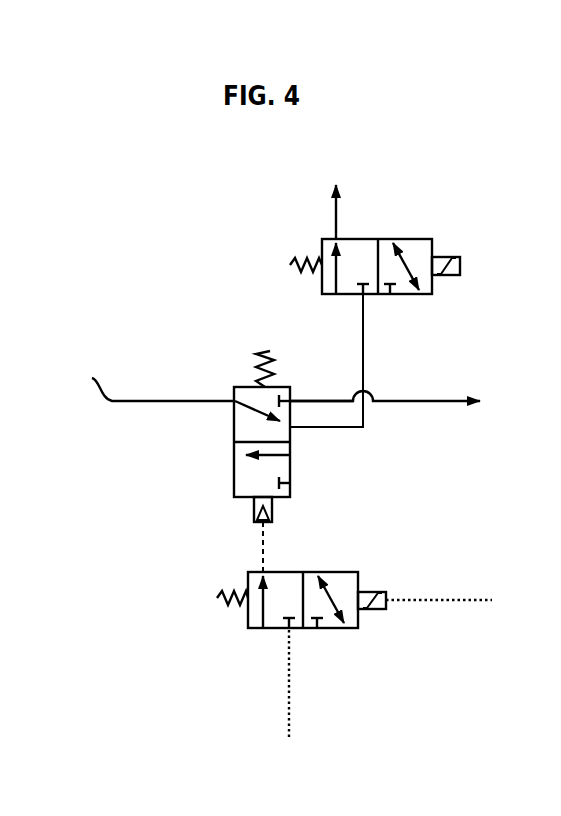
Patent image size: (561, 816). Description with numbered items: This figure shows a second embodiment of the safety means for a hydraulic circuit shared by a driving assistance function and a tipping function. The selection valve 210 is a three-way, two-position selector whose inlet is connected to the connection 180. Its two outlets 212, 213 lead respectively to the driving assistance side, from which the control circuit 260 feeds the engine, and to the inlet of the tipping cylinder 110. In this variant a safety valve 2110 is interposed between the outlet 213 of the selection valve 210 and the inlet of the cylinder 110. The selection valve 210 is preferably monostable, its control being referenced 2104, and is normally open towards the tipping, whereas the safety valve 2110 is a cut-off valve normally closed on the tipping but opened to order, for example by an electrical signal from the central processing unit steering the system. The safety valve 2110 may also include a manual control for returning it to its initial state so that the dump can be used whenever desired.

The tipping cylinder 110 is at (336, 178).
The connection 180 is at (147, 380).
The control circuit 260 is at (494, 401).
The selection valve 210 is at (221, 443).
The first outlet of the selector 212 is at (323, 397).
The second outlet of the selector 213 is at (322, 430).
The safety valve 2110 is at (275, 265).
The control of the selection valve 2104 is at (309, 644).